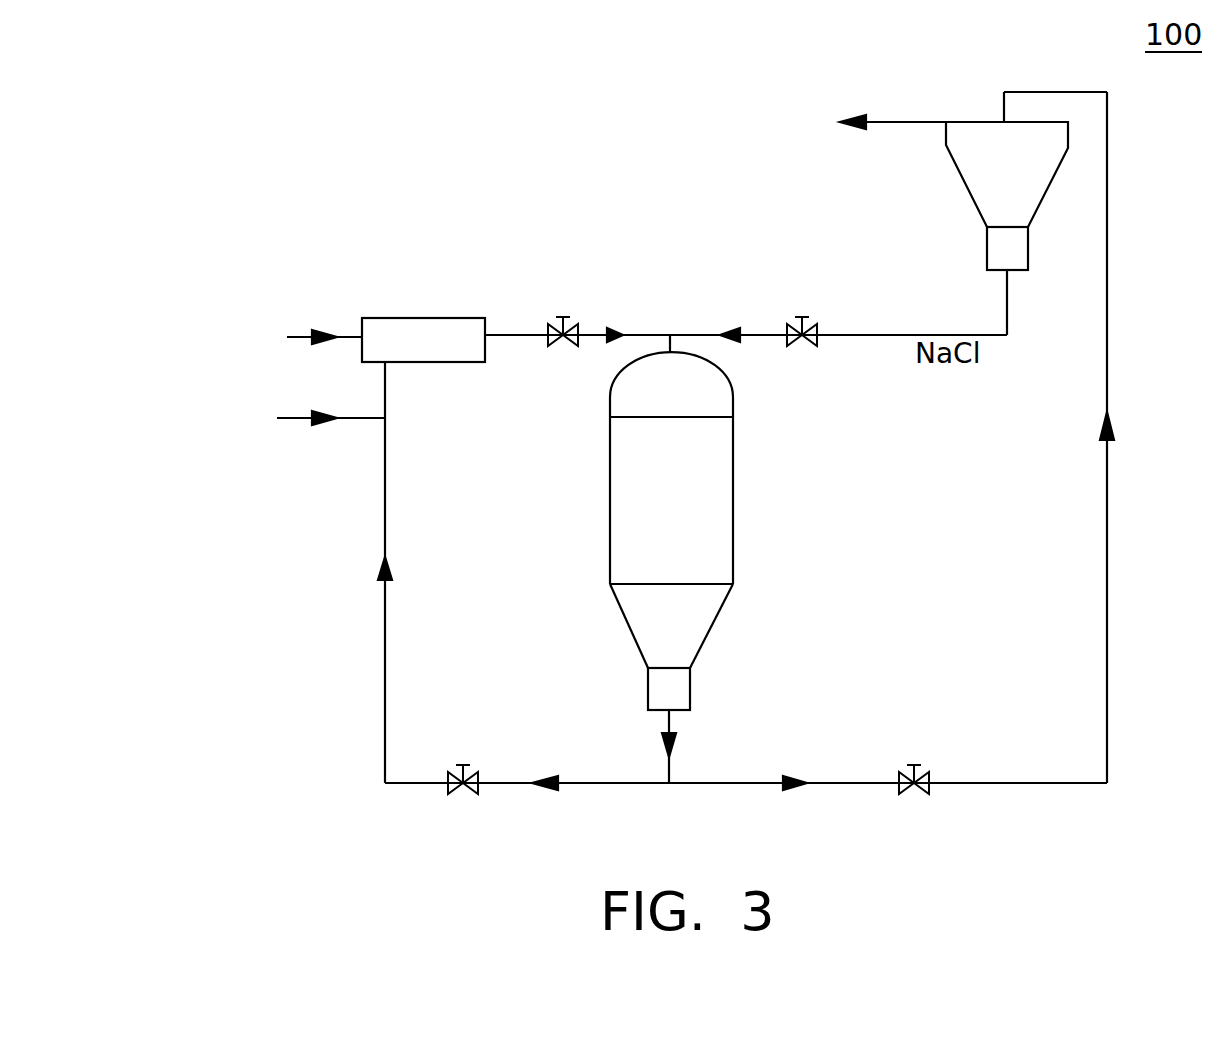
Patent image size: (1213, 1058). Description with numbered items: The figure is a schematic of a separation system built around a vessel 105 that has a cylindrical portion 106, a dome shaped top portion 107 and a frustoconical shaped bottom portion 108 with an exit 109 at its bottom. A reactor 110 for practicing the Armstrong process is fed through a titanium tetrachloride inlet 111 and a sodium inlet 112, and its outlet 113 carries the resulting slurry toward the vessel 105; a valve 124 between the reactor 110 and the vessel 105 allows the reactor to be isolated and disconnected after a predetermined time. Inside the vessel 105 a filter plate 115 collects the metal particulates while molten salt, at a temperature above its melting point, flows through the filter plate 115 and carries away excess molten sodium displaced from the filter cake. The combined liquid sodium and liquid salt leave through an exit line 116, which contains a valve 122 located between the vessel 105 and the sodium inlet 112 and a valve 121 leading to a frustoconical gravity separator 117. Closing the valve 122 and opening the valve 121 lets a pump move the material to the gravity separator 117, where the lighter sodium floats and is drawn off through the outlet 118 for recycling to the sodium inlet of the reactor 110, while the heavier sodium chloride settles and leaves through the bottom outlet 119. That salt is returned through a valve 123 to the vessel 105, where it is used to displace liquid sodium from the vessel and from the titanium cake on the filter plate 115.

The vessel 105 is at (684, 522).
The cylindrical portion 106 is at (612, 498).
The dome shaped top portion 107 is at (730, 387).
The frustoconical shaped bottom portion 108 is at (628, 632).
The exit 109 is at (693, 692).
The reactor 110 is at (441, 315).
The titanium tetrachloride inlet 111 is at (300, 336).
The sodium inlet 112 is at (365, 419).
The outlet 113 is at (500, 334).
The filter plate 115 is at (677, 583).
The exit line 116 is at (667, 775).
The gravity separator 117 is at (957, 176).
The outlet 118 is at (917, 120).
The bottom outlet 119 is at (1010, 290).
The valve 121 is at (928, 790).
The valve 122 is at (468, 797).
The valve 123 is at (797, 326).
The valve 124 is at (560, 347).